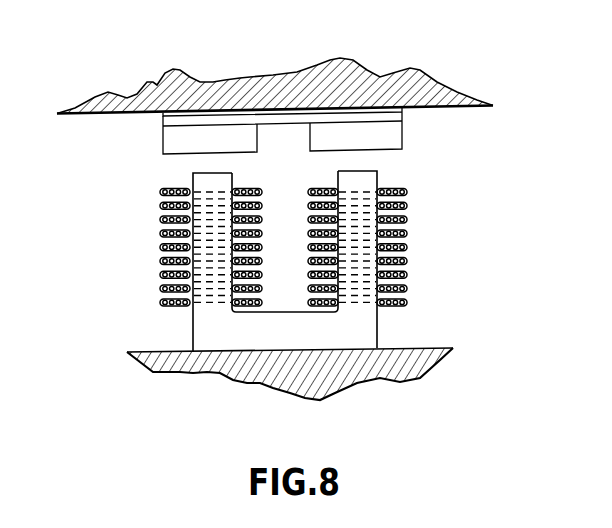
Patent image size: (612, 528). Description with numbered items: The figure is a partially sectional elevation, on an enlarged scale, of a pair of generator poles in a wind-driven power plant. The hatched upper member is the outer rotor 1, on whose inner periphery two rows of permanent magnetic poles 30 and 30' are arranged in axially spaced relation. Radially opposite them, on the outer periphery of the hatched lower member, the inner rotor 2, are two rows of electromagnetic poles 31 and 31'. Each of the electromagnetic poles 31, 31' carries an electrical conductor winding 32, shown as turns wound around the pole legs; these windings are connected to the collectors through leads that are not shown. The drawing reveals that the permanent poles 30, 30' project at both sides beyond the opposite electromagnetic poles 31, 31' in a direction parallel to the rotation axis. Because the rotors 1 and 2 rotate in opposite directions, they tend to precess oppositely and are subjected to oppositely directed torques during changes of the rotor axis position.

The outer rotor 1 is at (430, 90).
The inner rotor 2 is at (407, 363).
The permanent magnetic pole 30 is at (215, 84).
The permanent magnetic pole 30' is at (358, 83).
The electromagnetic pole 31 is at (138, 262).
The electromagnetic pole 31' is at (423, 259).
The electrical conductor winding 32 is at (160, 193).